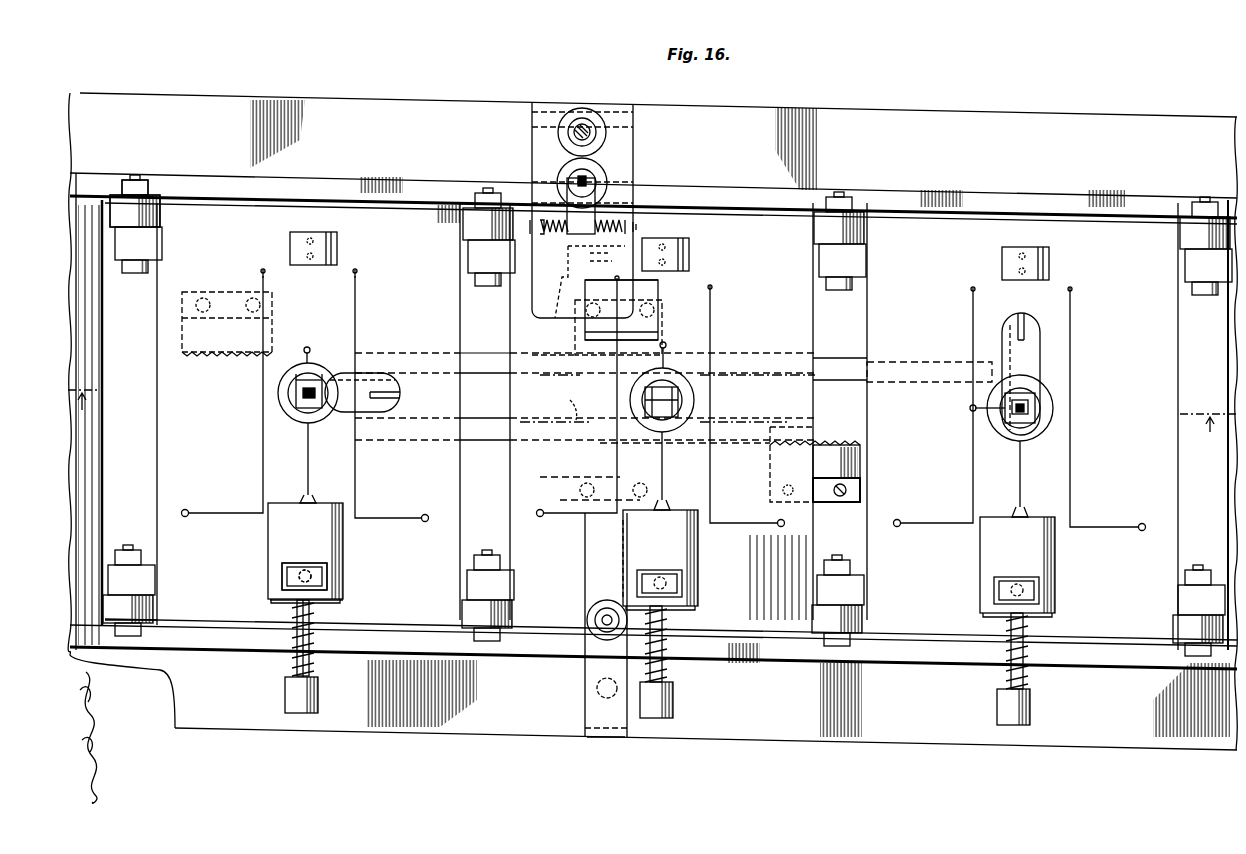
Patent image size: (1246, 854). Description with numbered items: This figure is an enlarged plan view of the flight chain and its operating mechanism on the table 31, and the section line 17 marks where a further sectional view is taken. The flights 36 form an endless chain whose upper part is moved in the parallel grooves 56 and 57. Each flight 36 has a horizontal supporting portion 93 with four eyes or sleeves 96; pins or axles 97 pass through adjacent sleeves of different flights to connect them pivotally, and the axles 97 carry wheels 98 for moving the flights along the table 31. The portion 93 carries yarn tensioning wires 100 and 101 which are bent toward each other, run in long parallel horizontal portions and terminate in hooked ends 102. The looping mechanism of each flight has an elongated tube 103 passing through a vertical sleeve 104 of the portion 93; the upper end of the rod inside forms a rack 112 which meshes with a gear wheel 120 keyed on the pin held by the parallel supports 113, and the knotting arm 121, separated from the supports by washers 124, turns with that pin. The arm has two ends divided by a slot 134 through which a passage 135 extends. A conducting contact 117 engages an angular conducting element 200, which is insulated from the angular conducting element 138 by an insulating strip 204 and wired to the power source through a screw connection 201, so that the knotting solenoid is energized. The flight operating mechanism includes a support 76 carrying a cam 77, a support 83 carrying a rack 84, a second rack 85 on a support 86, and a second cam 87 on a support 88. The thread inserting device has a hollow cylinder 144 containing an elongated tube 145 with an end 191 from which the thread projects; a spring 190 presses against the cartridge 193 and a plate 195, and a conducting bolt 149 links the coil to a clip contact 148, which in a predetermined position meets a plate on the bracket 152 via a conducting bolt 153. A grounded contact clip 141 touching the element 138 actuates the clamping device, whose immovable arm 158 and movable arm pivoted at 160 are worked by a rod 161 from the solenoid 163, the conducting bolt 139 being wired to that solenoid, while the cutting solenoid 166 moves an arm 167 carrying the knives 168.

The section line 17— 17 is at (652, 400).
The table 31 is at (1032, 119).
The flight 36 is at (92, 196).
The groove 56 is at (204, 645).
The groove 57 is at (322, 195).
The support 76 is at (575, 347).
The cam 77 is at (428, 353).
The support 83 is at (223, 292).
The rack 84 is at (214, 357).
The second rack 85 is at (838, 440).
The support 86 is at (840, 502).
The second cam 87 is at (490, 436).
The support 88 is at (590, 479).
The horizontal supporting portion 93 is at (103, 441).
The eyes or sleeves 96 is at (148, 241).
The pins or axles 97 is at (135, 178).
The wheels 98 is at (150, 193).
The yarn tensioning wire 100 is at (262, 474).
The yarn tensioning wire 101 is at (356, 477).
The hooked ends 102 is at (265, 275).
The elongated tube 103 is at (288, 400).
The vertical sleeve 104 is at (279, 396).
The rack 112 is at (302, 392).
The support 113 is at (323, 375).
The conducting contact 117 is at (308, 346).
The gear wheel 120 is at (297, 384).
The knotting arm 121 is at (383, 366).
The washers 124 is at (297, 374).
The slot 134 is at (401, 397).
The passage 135 is at (396, 382).
The angular conducting element 138 is at (585, 322).
The conducting bolt 139 is at (568, 268).
The grounded contact clip 141 is at (292, 240).
The hollow cylinder 144 is at (285, 534).
The elongated tube 145 is at (297, 667).
The clip contact 148 is at (290, 563).
The conducting bolt 149 is at (300, 578).
The bracket 152 is at (604, 732).
The conducting bolt 153 is at (595, 614).
The immovable arm 158 is at (532, 308).
The pivot 160 is at (637, 227).
The rod 161 is at (588, 180).
The solenoid 163 is at (557, 165).
The solenoid 166 is at (572, 112).
The arm 167 is at (585, 126).
The knives 168 is at (667, 398).
The spring 190 is at (314, 660).
The end 191 is at (306, 434).
The cartridge 193 is at (304, 713).
The plate 195 is at (340, 601).
The angular conducting element 200 is at (658, 292).
The screw connection 201 is at (625, 333).
The insulating strip 204 is at (658, 281).